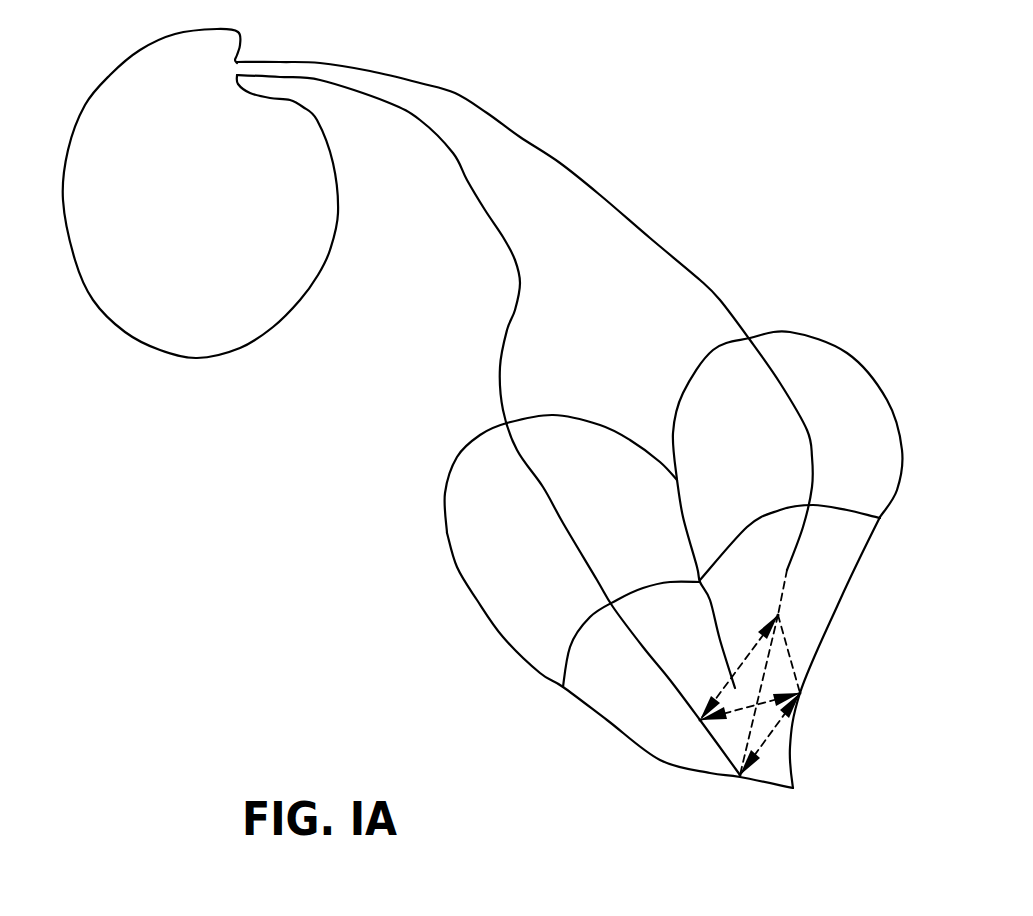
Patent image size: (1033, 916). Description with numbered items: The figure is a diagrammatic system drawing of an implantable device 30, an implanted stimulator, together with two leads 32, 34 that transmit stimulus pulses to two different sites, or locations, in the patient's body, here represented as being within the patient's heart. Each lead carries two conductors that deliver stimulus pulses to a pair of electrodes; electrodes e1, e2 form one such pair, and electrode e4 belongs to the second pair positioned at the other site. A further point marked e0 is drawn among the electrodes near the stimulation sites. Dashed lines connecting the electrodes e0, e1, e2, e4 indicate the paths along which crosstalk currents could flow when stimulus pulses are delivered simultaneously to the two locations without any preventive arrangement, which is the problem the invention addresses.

The implantable device 30 is at (110, 322).
The lead 32 is at (455, 93).
The lead 34 is at (465, 178).
The edge point e0 is at (680, 731).
The electrode e1 is at (733, 794).
The electrode e2 is at (796, 614).
The electrode e4 is at (818, 698).